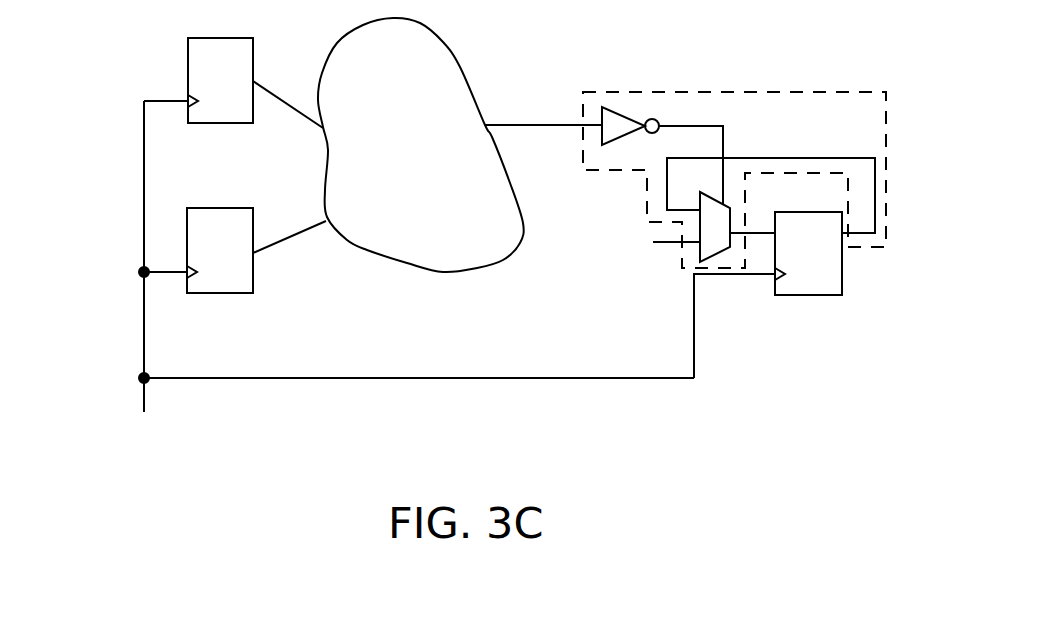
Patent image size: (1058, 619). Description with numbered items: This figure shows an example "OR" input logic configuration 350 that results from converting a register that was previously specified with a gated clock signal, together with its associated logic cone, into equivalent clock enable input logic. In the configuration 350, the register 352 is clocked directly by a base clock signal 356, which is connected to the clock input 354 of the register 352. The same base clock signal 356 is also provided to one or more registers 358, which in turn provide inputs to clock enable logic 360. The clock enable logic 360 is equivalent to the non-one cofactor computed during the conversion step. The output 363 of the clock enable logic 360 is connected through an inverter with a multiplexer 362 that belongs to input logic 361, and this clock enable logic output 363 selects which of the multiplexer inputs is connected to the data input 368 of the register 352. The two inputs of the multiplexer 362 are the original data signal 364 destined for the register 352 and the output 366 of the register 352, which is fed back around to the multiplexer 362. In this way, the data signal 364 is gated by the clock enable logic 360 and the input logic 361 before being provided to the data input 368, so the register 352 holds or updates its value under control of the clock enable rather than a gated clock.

The "OR" input logic configuration 350 is at (689, 440).
The register 352 is at (827, 272).
The clock input 354 is at (778, 278).
The base clock signal 356 is at (365, 282).
The registers 358 is at (233, 107).
The clock enable logic 360 is at (421, 145).
The input logic 361 is at (642, 182).
The multiplexer 362 is at (722, 212).
The output of clock enable logic 363 is at (570, 125).
The data signal 364 is at (655, 252).
The output of the register 366 is at (865, 158).
The data input 368 is at (773, 232).